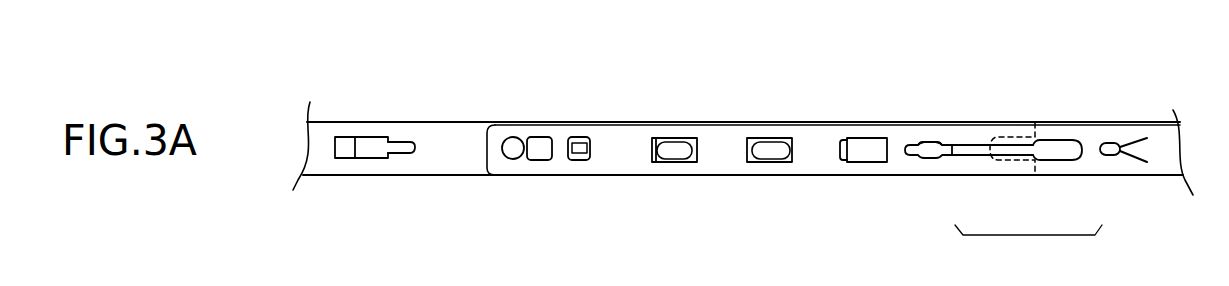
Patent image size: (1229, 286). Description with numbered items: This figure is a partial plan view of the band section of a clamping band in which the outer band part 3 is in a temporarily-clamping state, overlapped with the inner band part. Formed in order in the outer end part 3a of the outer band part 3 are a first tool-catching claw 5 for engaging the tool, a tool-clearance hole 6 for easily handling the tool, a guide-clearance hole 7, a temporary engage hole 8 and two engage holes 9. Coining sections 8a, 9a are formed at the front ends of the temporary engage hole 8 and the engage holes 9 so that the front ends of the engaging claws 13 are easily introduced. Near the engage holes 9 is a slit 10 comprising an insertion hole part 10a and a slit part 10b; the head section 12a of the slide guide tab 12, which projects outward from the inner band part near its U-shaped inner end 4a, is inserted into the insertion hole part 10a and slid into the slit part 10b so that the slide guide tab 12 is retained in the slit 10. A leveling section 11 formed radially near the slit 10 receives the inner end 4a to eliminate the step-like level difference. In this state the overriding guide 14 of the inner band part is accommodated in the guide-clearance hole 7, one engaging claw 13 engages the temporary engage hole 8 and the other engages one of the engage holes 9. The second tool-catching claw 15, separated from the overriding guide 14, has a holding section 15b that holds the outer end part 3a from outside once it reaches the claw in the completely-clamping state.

The outer band part 3 is at (622, 137).
The outer end part 3a is at (486, 140).
The inner end 4a is at (1036, 125).
The first tool-catching claw 5 is at (508, 145).
The tool-clearance hole 6 is at (535, 143).
The guide-clearance hole 7 is at (573, 142).
The temporary engage hole 8 is at (663, 142).
The coining section 8a is at (657, 138).
The engage holes 9 is at (863, 145).
The coining sections 9a is at (752, 160).
The slit 10 is at (1042, 276).
The insertion hole part 10a is at (1052, 152).
The slit part 10b is at (968, 148).
The leveling section 11 is at (1123, 145).
The slide guide tab 12 is at (948, 145).
The head section 12a is at (927, 145).
The engaging claws 13 is at (690, 140).
The overriding guide 14 is at (583, 143).
The second tool-catching claw 15 is at (350, 140).
The holding section 15b is at (402, 148).